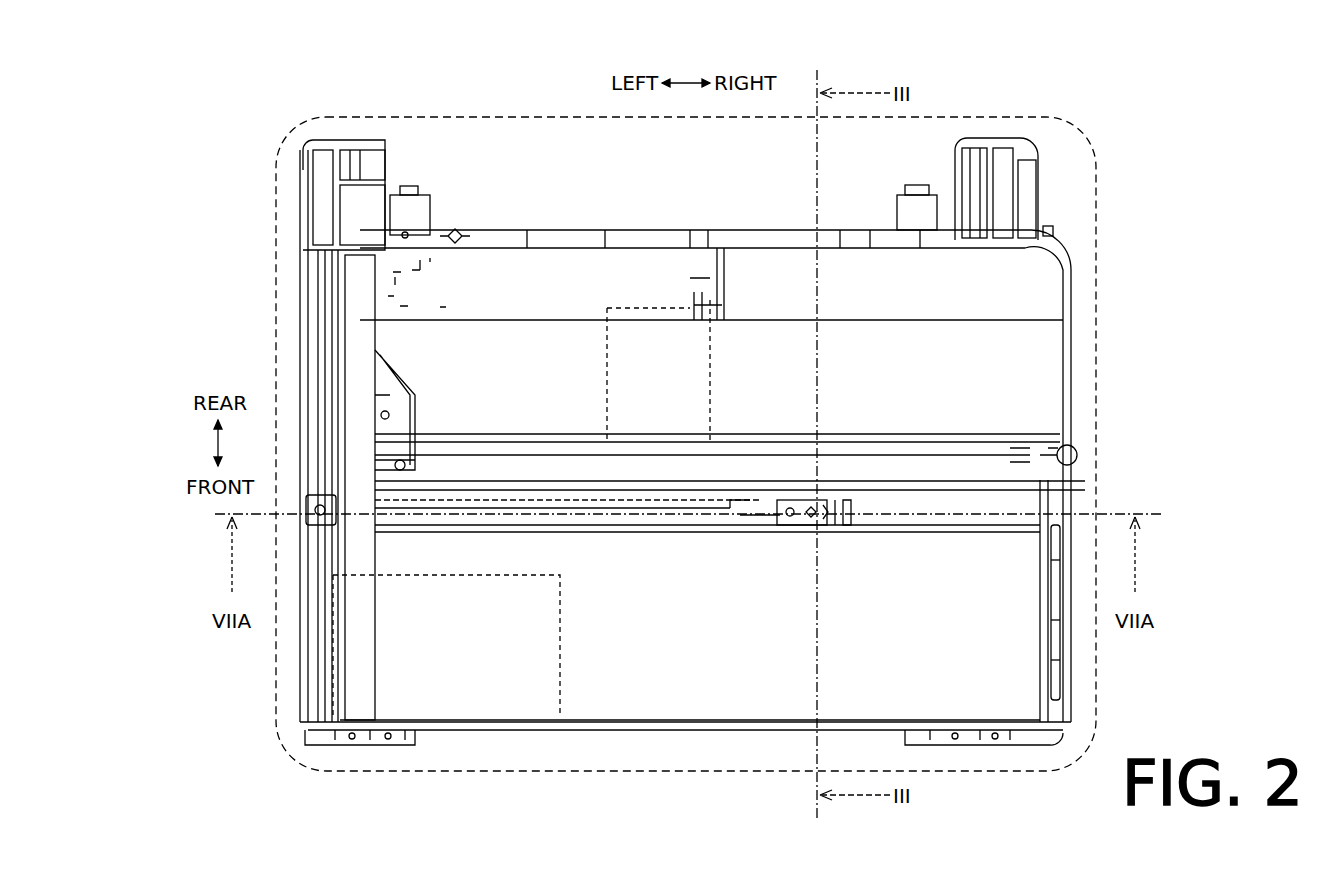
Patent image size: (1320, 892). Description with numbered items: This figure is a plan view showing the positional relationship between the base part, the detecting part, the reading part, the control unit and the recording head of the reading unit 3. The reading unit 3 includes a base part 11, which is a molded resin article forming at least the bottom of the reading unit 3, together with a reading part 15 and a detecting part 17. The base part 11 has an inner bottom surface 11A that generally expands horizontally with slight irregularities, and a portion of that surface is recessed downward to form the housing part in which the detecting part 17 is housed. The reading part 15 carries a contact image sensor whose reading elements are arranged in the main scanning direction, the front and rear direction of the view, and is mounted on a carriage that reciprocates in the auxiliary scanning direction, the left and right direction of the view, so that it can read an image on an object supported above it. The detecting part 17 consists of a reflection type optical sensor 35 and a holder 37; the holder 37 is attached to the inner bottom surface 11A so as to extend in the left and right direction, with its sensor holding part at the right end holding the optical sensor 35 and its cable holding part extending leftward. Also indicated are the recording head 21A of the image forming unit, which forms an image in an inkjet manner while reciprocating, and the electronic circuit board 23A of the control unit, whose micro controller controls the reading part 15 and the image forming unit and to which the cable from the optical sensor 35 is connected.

The reading unit 3 is at (1096, 172).
The base part 11 is at (580, 236).
The inner bottom surface 11A is at (712, 645).
The reading part 15 is at (355, 322).
The detecting part 17 is at (735, 523).
The recording head 21A is at (705, 372).
The electronic circuit board 23A is at (560, 635).
The optical sensor 35 is at (808, 525).
The holder 37 is at (622, 530).